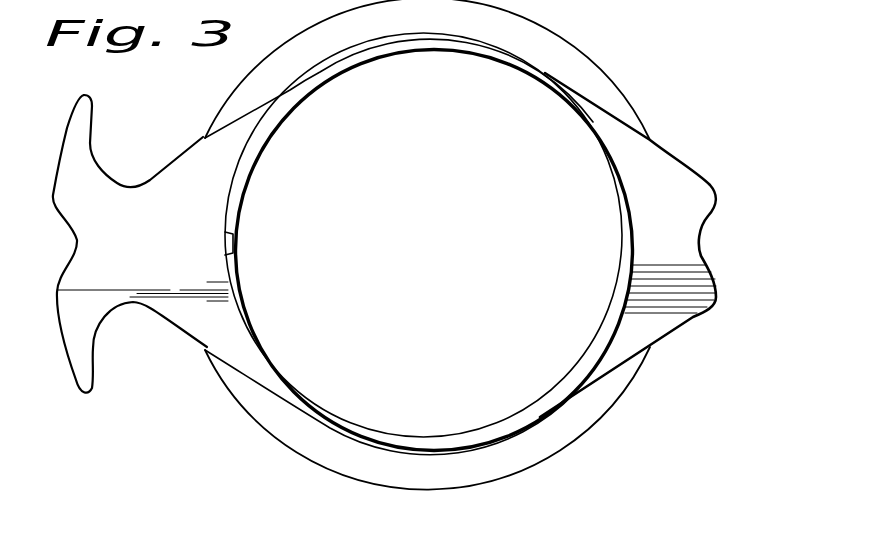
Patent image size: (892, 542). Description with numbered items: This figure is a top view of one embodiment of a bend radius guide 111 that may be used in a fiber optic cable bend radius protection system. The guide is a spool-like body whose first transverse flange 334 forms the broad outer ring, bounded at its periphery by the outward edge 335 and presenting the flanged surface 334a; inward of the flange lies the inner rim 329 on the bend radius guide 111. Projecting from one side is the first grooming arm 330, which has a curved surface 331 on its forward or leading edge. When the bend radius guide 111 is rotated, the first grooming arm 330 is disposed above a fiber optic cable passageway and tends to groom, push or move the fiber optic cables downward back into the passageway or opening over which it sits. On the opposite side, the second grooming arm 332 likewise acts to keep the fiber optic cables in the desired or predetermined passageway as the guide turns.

The bend radius guide 111 is at (637, 74).
The inner rim 329 is at (328, 414).
The first grooming arm 330 is at (168, 268).
The curved surface 331 is at (133, 303).
The second grooming arm 332 is at (652, 180).
The first transverse flange 334 is at (560, 433).
The flanged surface 334a is at (318, 447).
The outward edge 335 is at (482, 486).